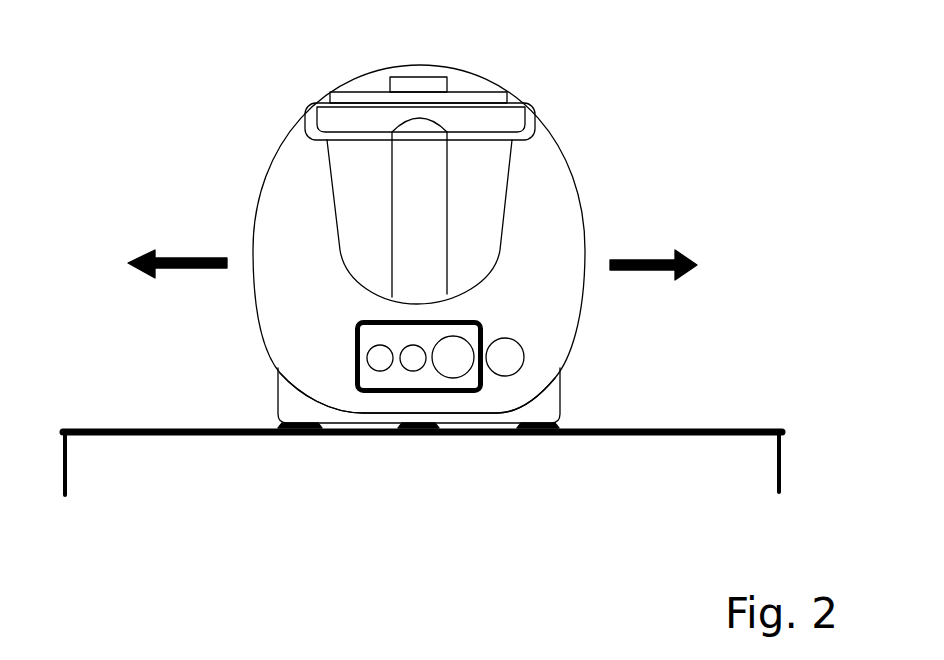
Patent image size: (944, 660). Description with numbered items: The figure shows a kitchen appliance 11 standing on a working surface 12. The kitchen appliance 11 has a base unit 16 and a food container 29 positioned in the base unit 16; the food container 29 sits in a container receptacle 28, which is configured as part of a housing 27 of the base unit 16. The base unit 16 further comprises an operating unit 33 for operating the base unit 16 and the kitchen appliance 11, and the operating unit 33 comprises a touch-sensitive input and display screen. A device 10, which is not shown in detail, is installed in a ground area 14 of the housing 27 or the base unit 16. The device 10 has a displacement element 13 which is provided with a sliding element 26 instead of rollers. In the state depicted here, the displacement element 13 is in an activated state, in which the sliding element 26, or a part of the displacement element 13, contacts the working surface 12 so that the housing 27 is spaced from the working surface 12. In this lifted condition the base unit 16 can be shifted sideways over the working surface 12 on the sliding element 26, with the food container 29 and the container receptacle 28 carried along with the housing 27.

The device 10 is at (305, 403).
The kitchen appliance 11 is at (593, 84).
The working surface 12 is at (753, 428).
The displacement element 13 is at (278, 428).
The ground area 14 is at (540, 402).
The base unit 16 is at (234, 210).
The sliding element 26 is at (302, 433).
The housing 27 is at (578, 332).
The container receptacle 28 is at (497, 247).
The food container 29 is at (487, 175).
The operating unit 33 is at (356, 321).